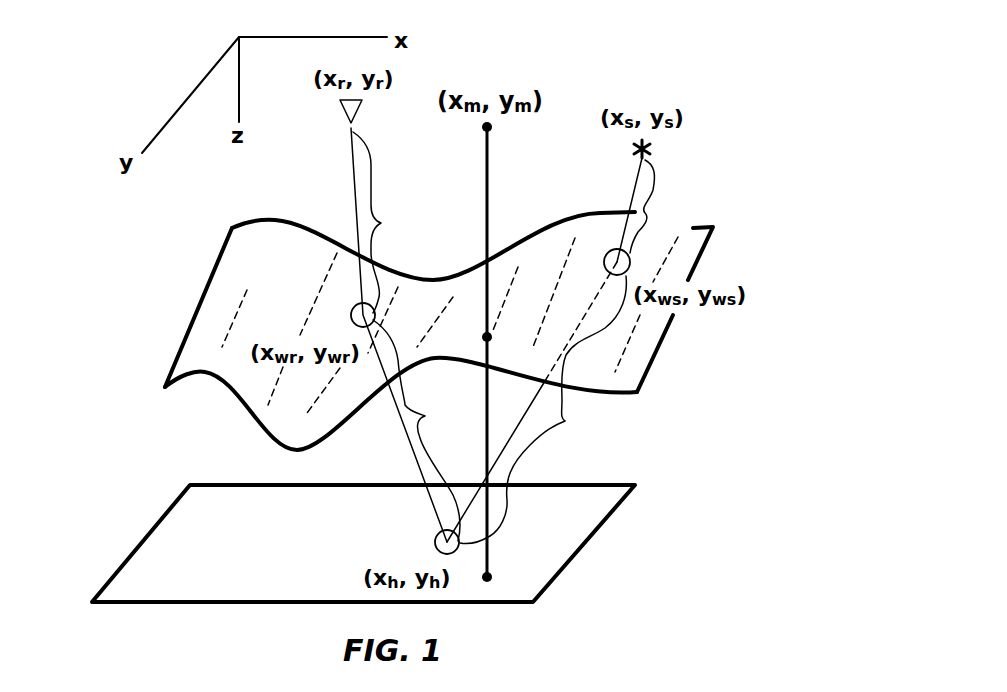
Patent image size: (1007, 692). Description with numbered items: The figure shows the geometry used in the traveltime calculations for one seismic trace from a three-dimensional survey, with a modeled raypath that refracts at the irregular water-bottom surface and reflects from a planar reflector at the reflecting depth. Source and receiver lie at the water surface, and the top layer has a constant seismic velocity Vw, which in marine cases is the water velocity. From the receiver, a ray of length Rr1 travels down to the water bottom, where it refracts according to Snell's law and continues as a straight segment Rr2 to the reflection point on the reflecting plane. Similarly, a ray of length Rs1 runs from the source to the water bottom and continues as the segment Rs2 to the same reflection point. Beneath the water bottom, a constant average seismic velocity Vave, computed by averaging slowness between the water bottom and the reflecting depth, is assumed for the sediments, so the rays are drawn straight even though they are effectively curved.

The seismic velocity of the top layer Vw is at (434, 331).
The average seismic velocity function Vave is at (390, 520).
The receiver ray length to water bottom Rr1 is at (388, 222).
The source ray length to water bottom Rs1 is at (662, 206).
The receiver ray segment below water bottom Rr2 is at (424, 430).
The source ray segment below water bottom Rs2 is at (543, 410).